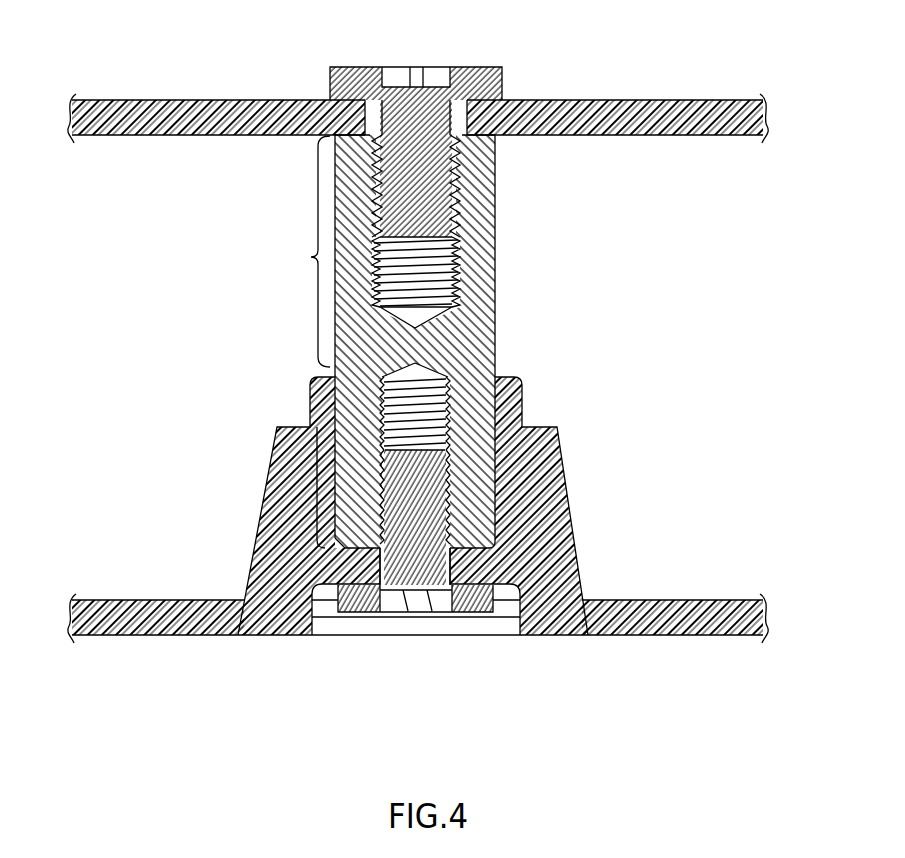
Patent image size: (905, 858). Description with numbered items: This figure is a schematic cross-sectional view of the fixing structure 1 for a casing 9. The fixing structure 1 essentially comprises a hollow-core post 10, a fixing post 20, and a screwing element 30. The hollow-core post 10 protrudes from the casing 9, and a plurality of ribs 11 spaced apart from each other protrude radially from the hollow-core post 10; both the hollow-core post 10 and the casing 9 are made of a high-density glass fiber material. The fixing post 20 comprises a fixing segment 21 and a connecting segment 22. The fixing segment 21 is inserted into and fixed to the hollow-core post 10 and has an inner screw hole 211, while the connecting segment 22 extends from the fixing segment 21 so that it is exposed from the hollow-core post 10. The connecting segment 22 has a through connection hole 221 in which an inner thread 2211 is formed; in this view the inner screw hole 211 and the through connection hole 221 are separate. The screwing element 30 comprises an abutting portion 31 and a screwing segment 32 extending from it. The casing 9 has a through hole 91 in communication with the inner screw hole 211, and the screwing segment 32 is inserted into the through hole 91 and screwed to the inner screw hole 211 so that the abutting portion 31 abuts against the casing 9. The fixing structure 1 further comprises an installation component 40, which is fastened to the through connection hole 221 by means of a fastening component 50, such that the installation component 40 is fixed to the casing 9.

The fixing structure 1 is at (604, 348).
The casing 9 is at (690, 603).
The through hole 91 is at (482, 620).
The hollow-core post 10 is at (452, 429).
The ribs 11 is at (262, 495).
The fixing post 20 is at (506, 250).
The fixing segment 21 is at (317, 463).
The inner screw hole 211 is at (450, 410).
The connecting segment 22 is at (307, 251).
The through connection hole 221 is at (423, 300).
The inner thread 2211 is at (457, 265).
The screwing element 30 is at (452, 429).
The abutting portion 31 is at (360, 606).
The screwing segment 32 is at (420, 508).
The installation component 40 is at (693, 108).
The fastening component 50 is at (405, 87).